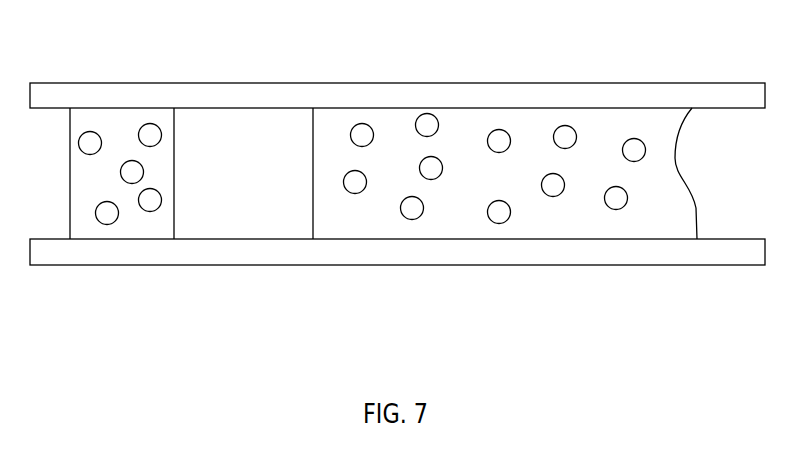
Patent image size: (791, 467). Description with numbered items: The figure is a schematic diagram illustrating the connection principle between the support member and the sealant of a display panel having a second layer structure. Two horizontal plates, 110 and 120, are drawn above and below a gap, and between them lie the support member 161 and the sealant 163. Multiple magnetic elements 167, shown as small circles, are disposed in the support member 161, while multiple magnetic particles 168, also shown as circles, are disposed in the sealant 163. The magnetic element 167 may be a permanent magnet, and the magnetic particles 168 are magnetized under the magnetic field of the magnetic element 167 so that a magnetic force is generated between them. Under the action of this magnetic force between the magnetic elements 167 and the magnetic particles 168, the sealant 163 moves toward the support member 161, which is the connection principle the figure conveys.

The first substrate 110 is at (363, 92).
The second substrate 120 is at (406, 252).
The support member 161 is at (90, 205).
The magnetic element 167 is at (150, 203).
The sealant 163 is at (579, 210).
The magnetic particles 168 is at (499, 213).